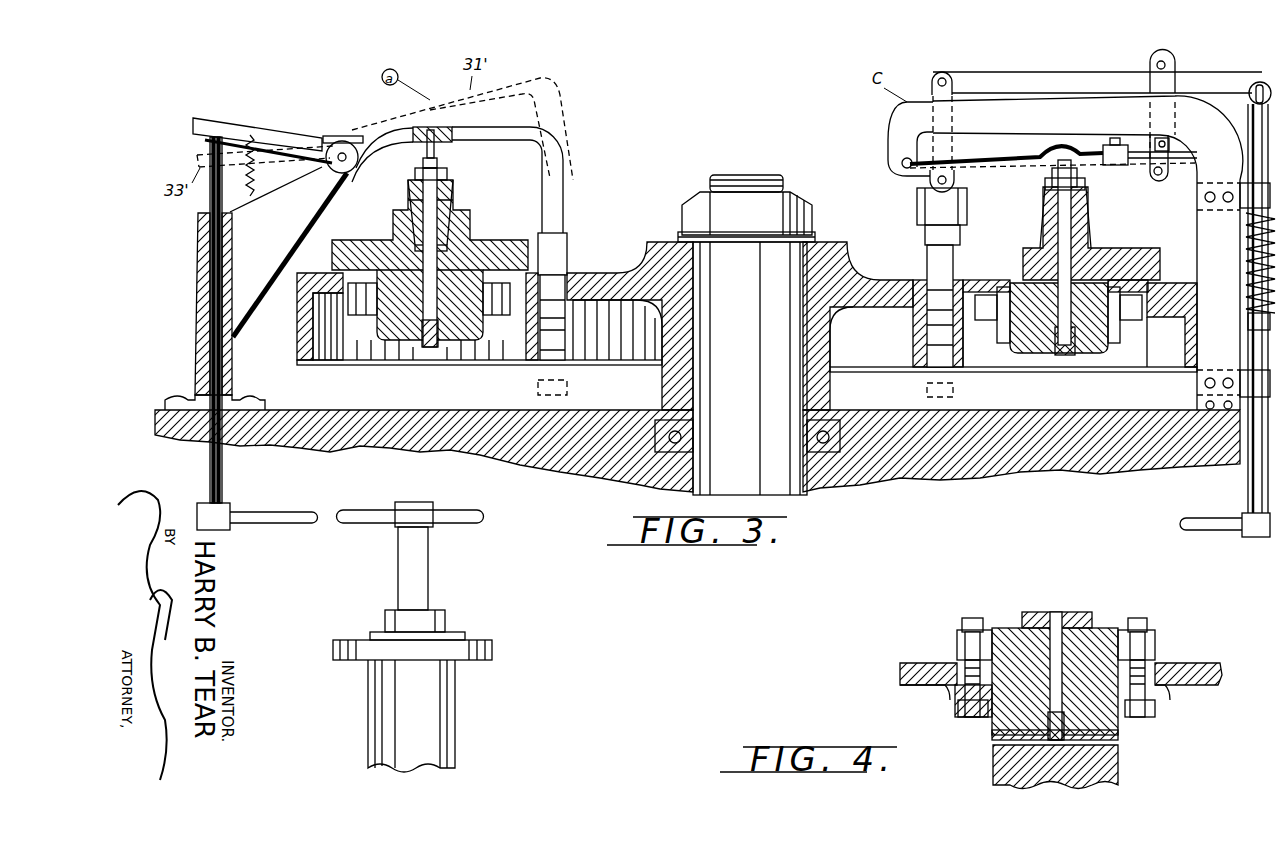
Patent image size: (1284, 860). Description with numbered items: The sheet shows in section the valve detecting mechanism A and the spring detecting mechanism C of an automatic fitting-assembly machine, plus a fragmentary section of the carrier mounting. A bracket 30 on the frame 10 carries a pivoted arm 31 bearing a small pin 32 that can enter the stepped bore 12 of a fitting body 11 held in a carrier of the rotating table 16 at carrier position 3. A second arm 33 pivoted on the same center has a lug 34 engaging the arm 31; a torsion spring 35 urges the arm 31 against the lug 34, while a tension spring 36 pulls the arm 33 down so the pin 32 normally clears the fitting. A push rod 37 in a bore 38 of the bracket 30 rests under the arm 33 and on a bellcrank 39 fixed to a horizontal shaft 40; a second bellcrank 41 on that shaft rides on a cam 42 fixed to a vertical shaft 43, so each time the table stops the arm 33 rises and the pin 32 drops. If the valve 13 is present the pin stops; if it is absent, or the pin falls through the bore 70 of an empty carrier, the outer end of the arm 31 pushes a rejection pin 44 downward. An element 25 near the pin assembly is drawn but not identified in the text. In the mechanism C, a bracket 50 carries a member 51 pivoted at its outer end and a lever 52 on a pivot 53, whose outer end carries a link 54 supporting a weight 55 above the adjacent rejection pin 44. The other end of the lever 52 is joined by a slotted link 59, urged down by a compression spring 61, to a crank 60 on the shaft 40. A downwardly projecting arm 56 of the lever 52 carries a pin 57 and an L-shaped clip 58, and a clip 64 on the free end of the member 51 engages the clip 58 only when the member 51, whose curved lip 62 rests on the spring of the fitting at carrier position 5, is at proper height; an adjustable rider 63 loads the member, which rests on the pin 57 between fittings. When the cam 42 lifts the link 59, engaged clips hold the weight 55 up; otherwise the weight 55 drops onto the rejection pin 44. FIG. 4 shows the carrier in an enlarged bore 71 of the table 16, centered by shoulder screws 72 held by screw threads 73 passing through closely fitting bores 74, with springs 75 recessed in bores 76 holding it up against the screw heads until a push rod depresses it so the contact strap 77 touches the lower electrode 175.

In FIG. 3, the carrier position 3 is at (503, 241).
In FIG. 3, the carrier position 5 is at (1128, 247).
In FIG. 3, the frame 10 is at (322, 404).
In FIG. 3, the fitting body 11 is at (446, 172).
In FIG. 3, the stepped bore 12 is at (421, 165).
In FIG. 3, the valve 13 is at (410, 201).
In FIG. 3, the rotating table 16 is at (583, 272).
In FIG. 4, the rotating table 16 is at (1195, 675).
In FIG. 3, the packing gland 25 is at (456, 199).
In FIG. 4, the packing gland 25 is at (1060, 612).
In FIG. 3, the bracket 30 is at (252, 308).
In FIG. 3, the pivoted arm 31 is at (490, 135).
In FIG. 3, the small pin 32 is at (436, 152).
In FIG. 3, the second arm 33 is at (222, 128).
In FIG. 3, the lug 34 is at (355, 174).
In FIG. 3, the torsion spring 35 is at (330, 137).
In FIG. 3, the tension spring 36 is at (237, 165).
In FIG. 3, the push rod 37 is at (200, 301).
In FIG. 3, the bore 38 is at (197, 353).
In FIG. 3, the bellcrank 39 is at (197, 495).
In FIG. 3, the horizontal shaft 40 is at (291, 506).
In FIG. 3, the second bellcrank 41 is at (430, 584).
In FIG. 3, the cam 42 is at (494, 648).
In FIG. 3, the vertical shaft 43 is at (457, 716).
In FIG. 3, the rejection pin 44 is at (569, 243).
In FIG. 3, the bracket 50 is at (1053, 100).
In FIG. 3, the member 51 is at (980, 168).
In FIG. 3, the lever 52 is at (1222, 83).
In FIG. 3, the pivot 53 is at (1160, 58).
In FIG. 3, the link 54 is at (950, 151).
In FIG. 3, the weight 55 is at (968, 215).
In FIG. 3, the downwardly projecting arm 56 is at (1166, 181).
In FIG. 3, the horizontally projecting pin 57 is at (1153, 173).
In FIG. 3, the L-shaped clip 58 is at (1172, 137).
In FIG. 3, the slotted link 59 is at (1250, 151).
In FIG. 3, the crank 60 is at (1255, 538).
In FIG. 3, the compression spring 61 is at (1248, 247).
In FIG. 3, the upwardly curved projecting lip 62 is at (1052, 155).
In FIG. 3, the sliding weight or rider 63 is at (1103, 152).
In FIG. 3, the horizontally projecting clip 64 is at (1197, 149).
In FIG. 3, the bore 70 is at (421, 292).
In FIG. 4, the bore 70 is at (1052, 672).
In FIG. 4, the enlarged bore 71 is at (990, 722).
In FIG. 4, the shoulder screws 72 is at (985, 618).
In FIG. 4, the screw threads 73 is at (965, 710).
In FIG. 4, the closely fitting bores 74 is at (957, 643).
In FIG. 4, the springs 75 is at (955, 700).
In FIG. 4, the bores 76 is at (905, 673).
In FIG. 4, the contact strap 77 is at (992, 740).
In FIG. 4, the lower electrode 175 is at (1120, 765).